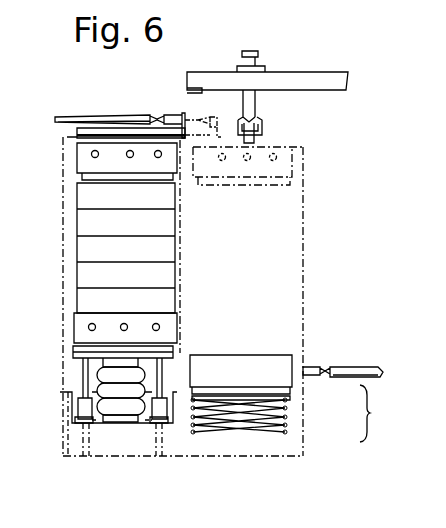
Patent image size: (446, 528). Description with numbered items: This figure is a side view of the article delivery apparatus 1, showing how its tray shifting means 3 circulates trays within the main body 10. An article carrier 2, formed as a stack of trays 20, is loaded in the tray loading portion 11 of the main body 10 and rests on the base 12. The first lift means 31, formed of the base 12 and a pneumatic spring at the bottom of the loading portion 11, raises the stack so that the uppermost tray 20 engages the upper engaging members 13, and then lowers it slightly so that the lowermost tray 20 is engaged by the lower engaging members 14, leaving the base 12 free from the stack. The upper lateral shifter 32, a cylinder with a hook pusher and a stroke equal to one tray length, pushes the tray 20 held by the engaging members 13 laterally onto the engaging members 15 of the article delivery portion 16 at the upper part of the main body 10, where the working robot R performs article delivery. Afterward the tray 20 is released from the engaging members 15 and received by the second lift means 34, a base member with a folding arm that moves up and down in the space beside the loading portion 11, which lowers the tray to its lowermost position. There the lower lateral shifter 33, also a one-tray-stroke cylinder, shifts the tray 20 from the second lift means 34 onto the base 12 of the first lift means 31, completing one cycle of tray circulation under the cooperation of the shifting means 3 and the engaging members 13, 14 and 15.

The article delivery apparatus 1 is at (304, 201).
The article carrier 2 is at (74, 200).
The tray shifting means 3 is at (389, 425).
The main body 10 is at (305, 233).
The tray loading portion 11 is at (67, 290).
The base 12 is at (78, 350).
The upper engaging members 13 is at (91, 154).
The lower engaging members 14 is at (88, 326).
The engaging members 15 is at (280, 162).
The article delivery portion 16 is at (264, 142).
The tray 20 is at (82, 166).
The first lift means 31 is at (100, 374).
The upper lateral shifter 32 is at (125, 117).
The lower lateral shifter 33 is at (337, 373).
The second lift means 34 is at (290, 399).
The working robot R is at (297, 80).